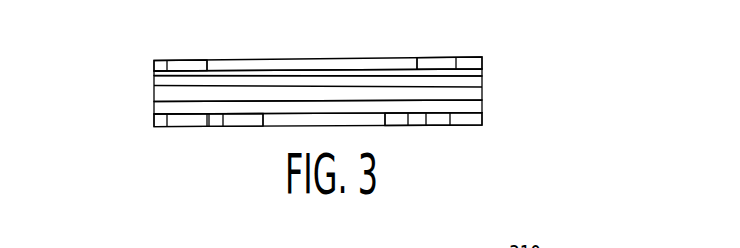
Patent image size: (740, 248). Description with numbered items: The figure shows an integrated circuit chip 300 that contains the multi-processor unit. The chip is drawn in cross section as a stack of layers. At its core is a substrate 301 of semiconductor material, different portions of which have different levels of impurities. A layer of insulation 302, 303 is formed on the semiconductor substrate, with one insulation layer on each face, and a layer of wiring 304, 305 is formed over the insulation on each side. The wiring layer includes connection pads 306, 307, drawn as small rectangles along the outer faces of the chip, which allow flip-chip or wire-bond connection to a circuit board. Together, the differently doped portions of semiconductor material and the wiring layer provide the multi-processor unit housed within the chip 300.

The integrated circuit chip 300 is at (113, 70).
The substrate 301 is at (483, 92).
The layer of insulation 302 is at (483, 70).
The layer of insulation 303 is at (483, 105).
The layer of wiring 304 is at (485, 62).
The layer of wiring 305 is at (483, 118).
The connection pads 306 is at (435, 65).
The connection pads 307 is at (438, 122).